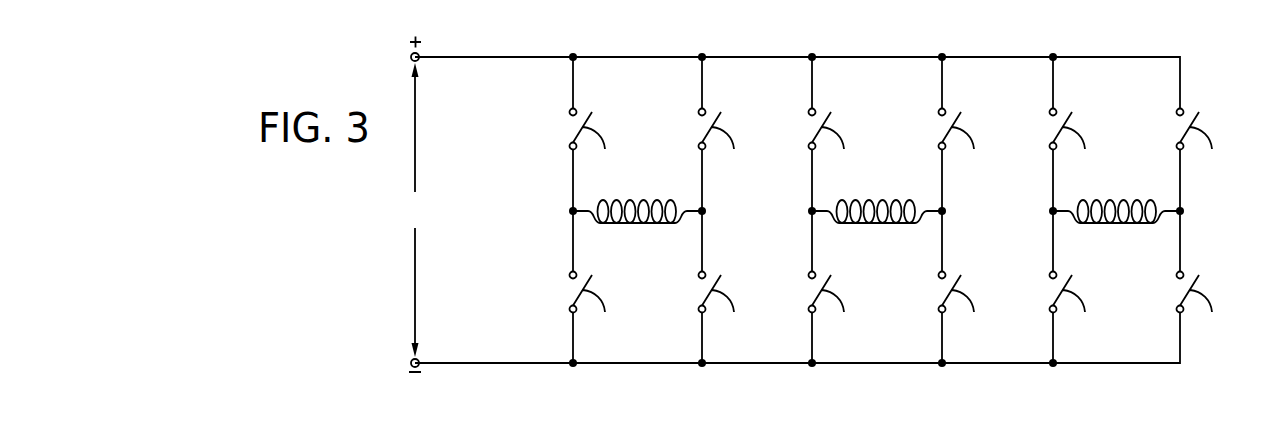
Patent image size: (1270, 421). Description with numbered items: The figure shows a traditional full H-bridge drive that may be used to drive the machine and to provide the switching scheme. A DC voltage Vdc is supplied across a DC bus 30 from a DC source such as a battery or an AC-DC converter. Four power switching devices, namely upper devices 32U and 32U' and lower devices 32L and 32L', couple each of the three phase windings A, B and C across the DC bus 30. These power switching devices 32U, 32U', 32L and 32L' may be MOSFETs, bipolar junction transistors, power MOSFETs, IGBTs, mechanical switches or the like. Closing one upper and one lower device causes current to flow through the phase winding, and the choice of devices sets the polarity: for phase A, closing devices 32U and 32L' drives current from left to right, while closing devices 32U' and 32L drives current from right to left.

The DC bus 30 is at (450, 208).
The upper power switching device 32U is at (840, 143).
The upper power switching device 32U' is at (970, 143).
The lower power switching device 32L is at (838, 305).
The lower power switching device 32L' is at (968, 305).